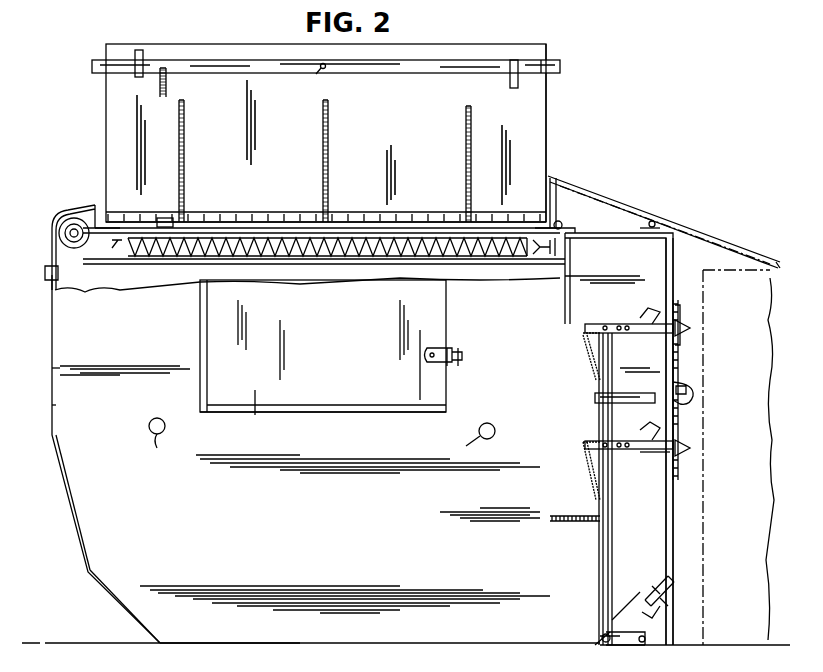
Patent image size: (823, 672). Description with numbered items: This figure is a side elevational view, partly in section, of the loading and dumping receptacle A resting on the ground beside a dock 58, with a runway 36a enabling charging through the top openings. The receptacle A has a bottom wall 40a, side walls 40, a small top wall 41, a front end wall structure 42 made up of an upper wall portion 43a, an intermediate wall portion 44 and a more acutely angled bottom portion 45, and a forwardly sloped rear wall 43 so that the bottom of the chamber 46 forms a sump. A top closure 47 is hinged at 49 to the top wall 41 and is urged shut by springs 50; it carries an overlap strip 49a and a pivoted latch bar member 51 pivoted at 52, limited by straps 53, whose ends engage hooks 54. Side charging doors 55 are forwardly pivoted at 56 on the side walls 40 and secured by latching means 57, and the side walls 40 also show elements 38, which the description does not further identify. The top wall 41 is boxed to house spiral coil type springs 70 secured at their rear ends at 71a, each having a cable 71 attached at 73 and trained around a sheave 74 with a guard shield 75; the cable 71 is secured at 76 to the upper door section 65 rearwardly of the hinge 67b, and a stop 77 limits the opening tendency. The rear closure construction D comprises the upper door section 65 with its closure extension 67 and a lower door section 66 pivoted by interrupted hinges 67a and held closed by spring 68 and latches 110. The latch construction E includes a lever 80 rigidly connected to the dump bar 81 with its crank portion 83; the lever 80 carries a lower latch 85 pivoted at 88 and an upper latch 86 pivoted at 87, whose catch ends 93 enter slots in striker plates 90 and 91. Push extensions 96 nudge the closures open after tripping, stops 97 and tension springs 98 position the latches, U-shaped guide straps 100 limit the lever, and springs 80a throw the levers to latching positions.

The closure 47 is at (106, 136).
The bar member 51 is at (382, 73).
The straps 53 is at (142, 52).
The hooks 54 is at (514, 88).
The pivot 52 is at (316, 74).
The overlap strip 49a is at (548, 62).
The springs 50 is at (185, 150).
The hinges 49 is at (218, 214).
The stop 77 is at (163, 218).
The cable 71 is at (258, 230).
The spiral coil type springs 70 is at (383, 262).
The rear end securing location 71a is at (538, 262).
The cable attachment 73 is at (100, 280).
The sheave 74 is at (70, 218).
The guard shield 75 is at (56, 218).
The top wall 41 is at (108, 250).
The pivot 56 is at (200, 332).
The side charging doors 55 is at (332, 410).
The latching or locking means 57 is at (448, 350).
The button 38 is at (322, 439).
The side walls 40 is at (126, 538).
The intermediate wall portion 44 is at (70, 530).
The bottom wall portion 45 is at (120, 604).
The front end wall structure 42 is at (50, 366).
The upper wall portion 43a is at (50, 406).
The bottom wall 40a is at (232, 642).
The loading and dumping receptacle A is at (92, 468).
The runway 36a is at (625, 198).
The hinge 67b is at (568, 222).
The cable securing location 76 is at (656, 222).
The closure extension 67 is at (601, 250).
The upper door section 65 is at (682, 278).
The upper latch 86 is at (655, 333).
The pivot 87 is at (606, 324).
The receptacle chamber 46 is at (645, 306).
The striker plate 91 is at (680, 312).
The catch ends 93 is at (690, 328).
The latch supporting lever 80 is at (603, 492).
The stops 97 is at (588, 342).
The tension springs 98 is at (592, 356).
The U-shaped guide straps 100 is at (600, 402).
The push extensions 96 is at (648, 420).
The pivot 88 is at (604, 441).
The lower latch 85 is at (636, 452).
The striker plate 90 is at (676, 430).
The spring 68 is at (682, 472).
The interrupted hinges 67a is at (698, 390).
The springs 80a is at (596, 522).
The closure latch and closure opening construction E is at (600, 560).
The rear dumping or discharge closure construction D is at (672, 530).
The lower door section 66 is at (678, 556).
The rear wall 43 is at (628, 604).
The latches 110 is at (668, 606).
The dump bar 81 is at (598, 646).
The crank portion 83 is at (630, 645).
The dock 58 is at (734, 640).